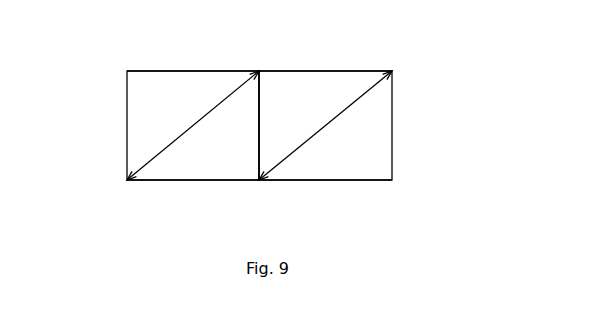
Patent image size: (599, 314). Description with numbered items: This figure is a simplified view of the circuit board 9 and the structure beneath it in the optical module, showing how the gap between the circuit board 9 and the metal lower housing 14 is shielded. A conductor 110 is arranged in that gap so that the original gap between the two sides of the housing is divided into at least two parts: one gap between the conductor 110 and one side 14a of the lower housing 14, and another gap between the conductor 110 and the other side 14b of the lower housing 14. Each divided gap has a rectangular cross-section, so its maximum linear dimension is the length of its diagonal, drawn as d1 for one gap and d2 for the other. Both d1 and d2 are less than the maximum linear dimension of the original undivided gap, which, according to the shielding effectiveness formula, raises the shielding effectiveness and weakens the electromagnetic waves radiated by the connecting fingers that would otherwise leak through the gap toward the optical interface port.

The circuit board 9 is at (195, 70).
The lower housing 14 is at (228, 181).
The one side of the lower housing 14a is at (126, 128).
The other side of the lower housing 14b is at (392, 118).
The conductor 110 is at (260, 120).
The maximum linear dimension of divided gap d1 is at (193, 125).
The maximum linear dimension of divided gap d2 is at (325, 125).